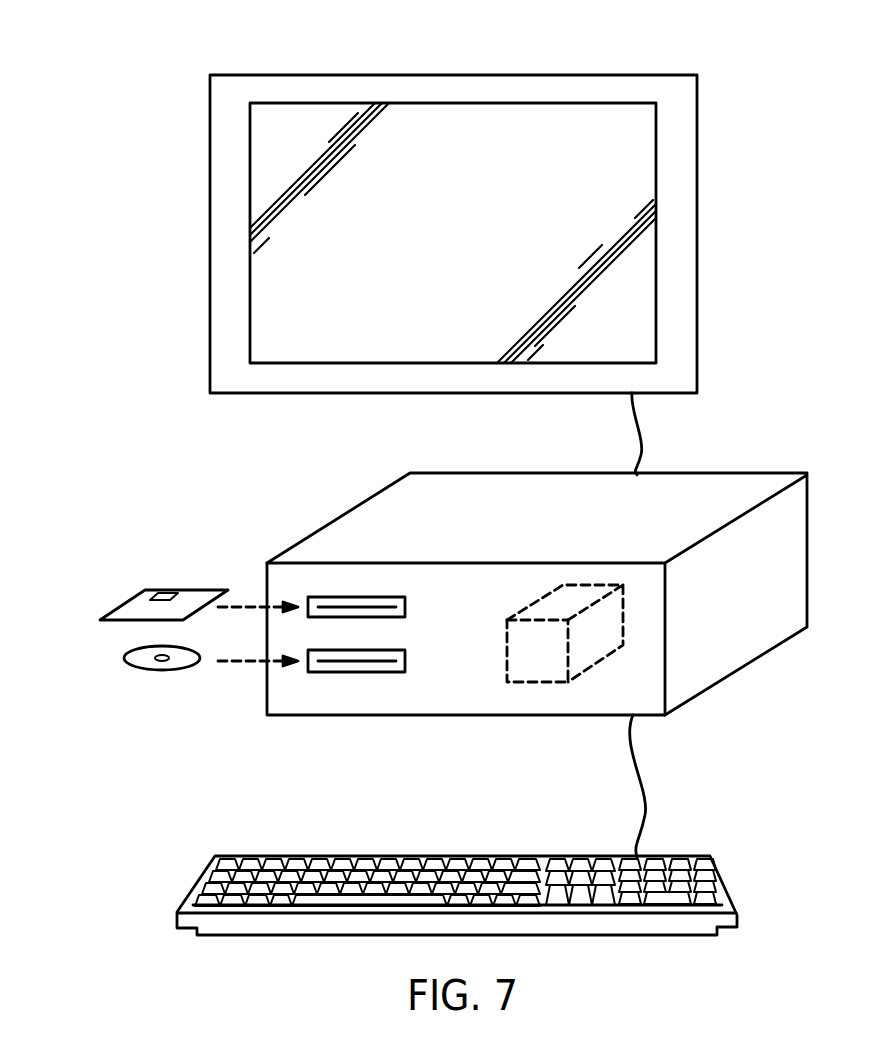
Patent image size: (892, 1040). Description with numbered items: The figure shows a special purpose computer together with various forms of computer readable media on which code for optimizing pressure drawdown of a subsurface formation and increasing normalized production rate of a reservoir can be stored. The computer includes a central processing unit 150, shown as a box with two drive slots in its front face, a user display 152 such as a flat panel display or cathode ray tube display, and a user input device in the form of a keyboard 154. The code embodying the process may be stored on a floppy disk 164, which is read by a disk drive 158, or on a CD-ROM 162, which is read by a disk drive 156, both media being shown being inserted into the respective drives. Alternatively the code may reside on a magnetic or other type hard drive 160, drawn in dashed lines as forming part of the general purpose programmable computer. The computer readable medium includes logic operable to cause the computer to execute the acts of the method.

The central processing unit 150 is at (738, 473).
The user display 152 is at (447, 75).
The keyboard 154 is at (728, 883).
The disk drive 156 is at (345, 672).
The disk drive 158 is at (368, 597).
The hard drive 160 is at (535, 683).
The CD-ROM 162 is at (147, 672).
The floppy disk 164 is at (127, 605).